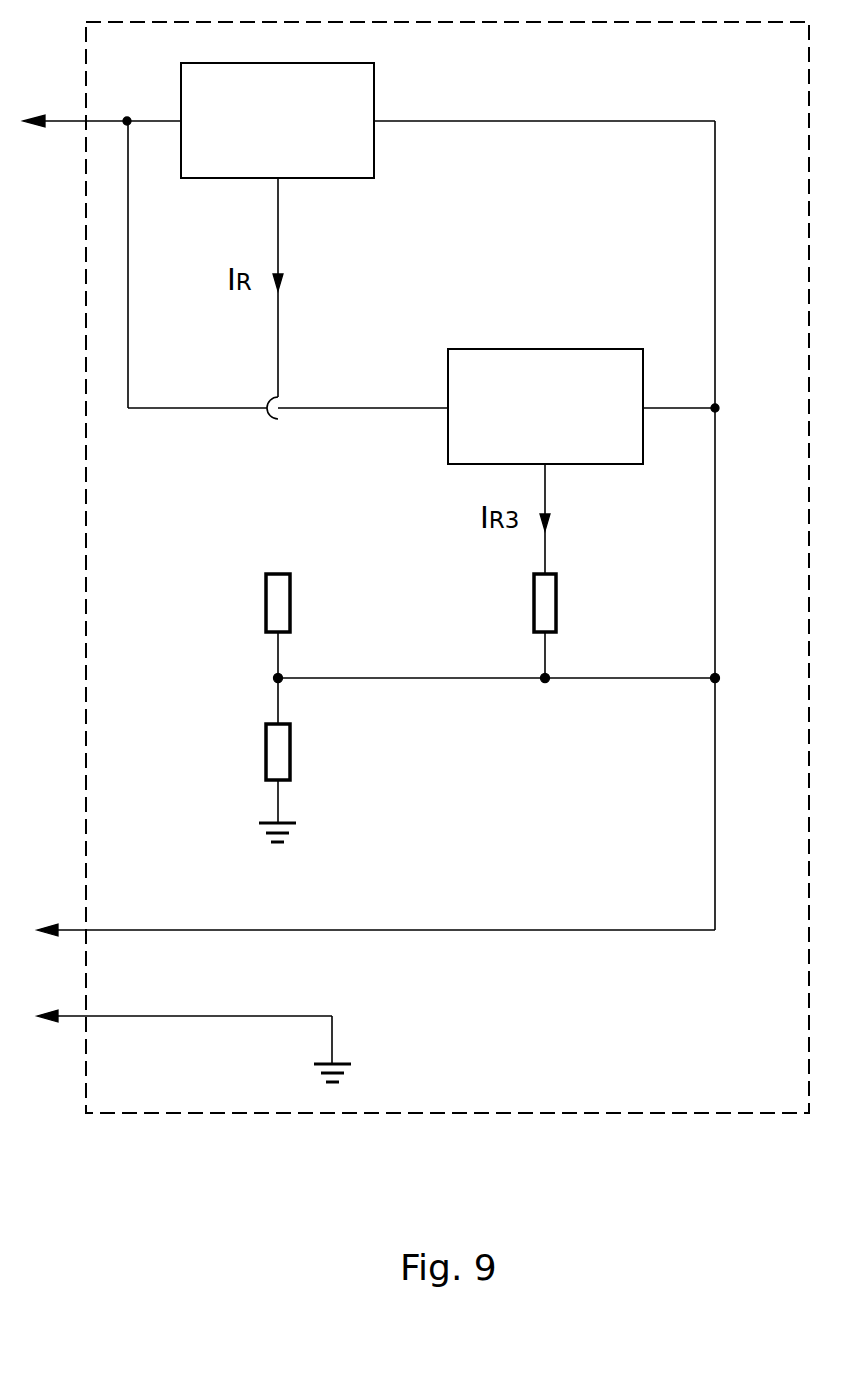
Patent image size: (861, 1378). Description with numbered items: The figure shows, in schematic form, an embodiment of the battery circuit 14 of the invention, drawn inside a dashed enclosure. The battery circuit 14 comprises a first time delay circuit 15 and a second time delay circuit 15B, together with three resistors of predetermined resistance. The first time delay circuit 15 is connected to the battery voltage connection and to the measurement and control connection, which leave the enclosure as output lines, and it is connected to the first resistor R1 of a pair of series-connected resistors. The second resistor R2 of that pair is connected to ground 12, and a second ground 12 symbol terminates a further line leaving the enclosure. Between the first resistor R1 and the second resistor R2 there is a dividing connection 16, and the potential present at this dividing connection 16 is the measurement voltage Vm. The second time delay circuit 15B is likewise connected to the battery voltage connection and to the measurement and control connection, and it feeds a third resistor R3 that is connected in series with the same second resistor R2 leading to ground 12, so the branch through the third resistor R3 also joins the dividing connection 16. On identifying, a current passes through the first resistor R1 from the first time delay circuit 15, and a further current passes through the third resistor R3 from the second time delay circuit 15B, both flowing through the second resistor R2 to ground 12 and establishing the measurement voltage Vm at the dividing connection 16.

The battery circuit 14 is at (447, 1113).
The time delay circuit 15 is at (375, 106).
The second time delay circuit 15B is at (546, 349).
The dividing connection 16 is at (276, 678).
The ground 12 is at (292, 823).
The first resistor R1 is at (265, 603).
The second resistor R2 is at (265, 756).
The third resistor R3 is at (533, 602).
The measurement voltage Vm is at (716, 677).